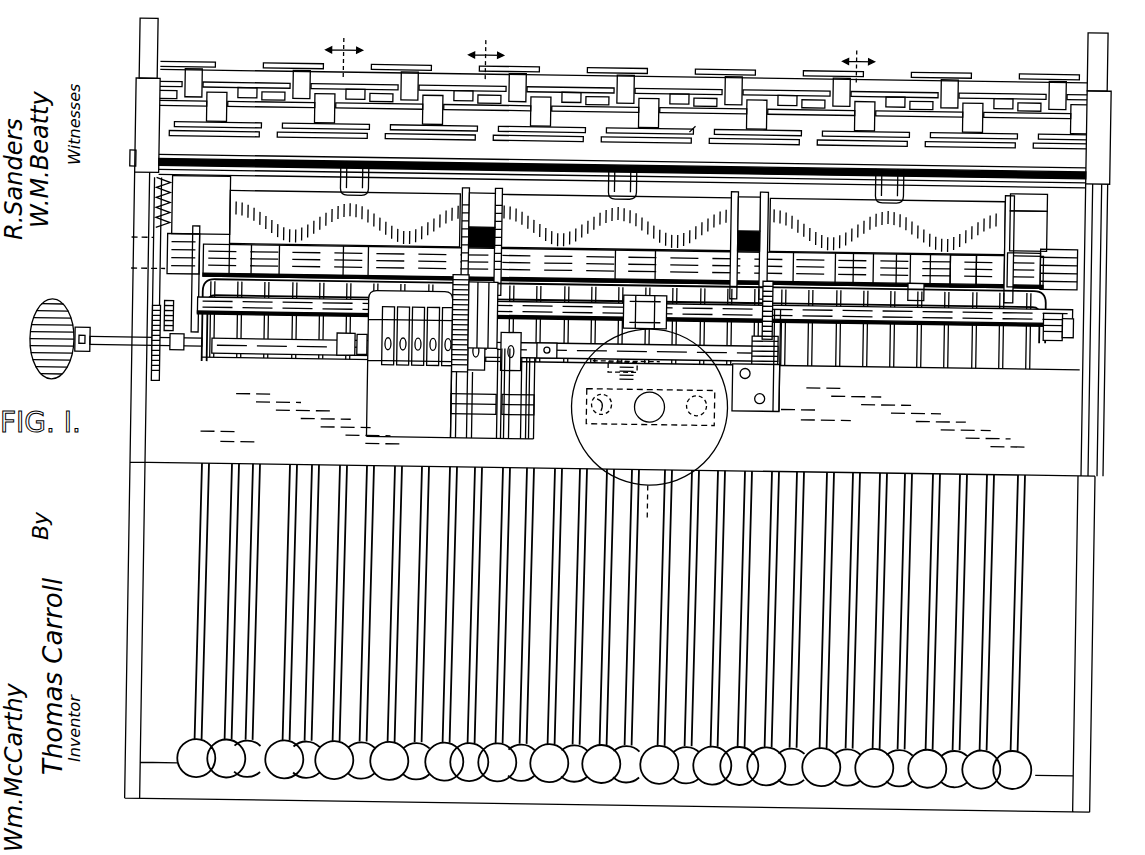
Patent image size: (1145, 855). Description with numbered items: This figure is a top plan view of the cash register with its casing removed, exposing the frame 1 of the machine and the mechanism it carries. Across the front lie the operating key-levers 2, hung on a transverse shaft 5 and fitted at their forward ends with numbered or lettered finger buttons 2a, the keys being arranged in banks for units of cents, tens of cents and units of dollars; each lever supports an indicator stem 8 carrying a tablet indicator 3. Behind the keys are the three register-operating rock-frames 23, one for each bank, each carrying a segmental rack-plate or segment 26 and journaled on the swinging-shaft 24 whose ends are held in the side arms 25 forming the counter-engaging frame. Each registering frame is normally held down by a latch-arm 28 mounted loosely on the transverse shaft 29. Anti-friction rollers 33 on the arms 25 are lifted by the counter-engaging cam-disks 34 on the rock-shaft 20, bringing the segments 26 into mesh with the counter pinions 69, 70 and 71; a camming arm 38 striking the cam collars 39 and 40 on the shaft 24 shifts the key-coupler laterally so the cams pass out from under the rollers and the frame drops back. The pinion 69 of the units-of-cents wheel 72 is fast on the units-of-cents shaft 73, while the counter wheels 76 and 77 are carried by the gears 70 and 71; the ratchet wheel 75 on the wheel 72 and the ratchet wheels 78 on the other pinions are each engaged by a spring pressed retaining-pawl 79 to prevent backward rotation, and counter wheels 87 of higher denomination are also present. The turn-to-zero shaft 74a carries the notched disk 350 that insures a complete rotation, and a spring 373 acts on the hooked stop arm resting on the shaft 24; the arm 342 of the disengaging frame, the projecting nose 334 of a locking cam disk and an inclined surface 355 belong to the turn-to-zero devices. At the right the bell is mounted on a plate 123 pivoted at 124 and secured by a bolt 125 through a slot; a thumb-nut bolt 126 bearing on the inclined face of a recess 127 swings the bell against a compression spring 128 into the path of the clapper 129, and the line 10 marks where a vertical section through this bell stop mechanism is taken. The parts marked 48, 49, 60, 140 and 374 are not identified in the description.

The frame 1 is at (1082, 545).
The operating key-levers 2 is at (1030, 567).
The finger buttons 2a is at (906, 780).
The indicators 3 is at (831, 795).
The transverse shaft 5 is at (344, 54).
The indicator stem 8 is at (395, 110).
The section line 10 is at (668, 285).
The rock-shaft 20 is at (930, 312).
The register-operating rock-frame 23 is at (617, 226).
The swinging-shaft 24 is at (203, 247).
The side arms 25 is at (192, 350).
The segmental rack-plate 26 is at (782, 233).
The latch-arms 28 is at (897, 189).
The transverse shaft 29 is at (815, 167).
The anti-friction roller 33 is at (1072, 318).
The counter-engaging cam-disks 34 is at (180, 297).
The second camming arm 38 is at (911, 283).
The cam collar 39 is at (944, 235).
The second cam collar 40 is at (912, 272).
The bracket 48 is at (1030, 200).
The bracket block 49 is at (1031, 231).
The lever block 60 is at (512, 392).
The counter pinion 69 is at (770, 360).
The counter pinion 70 is at (470, 366).
The counter pinion 71 is at (420, 366).
The units-of-cents wheel 72 is at (512, 368).
The units-of-cents shaft 73 is at (716, 353).
The turn-to-zero shaft 74a is at (251, 345).
The ratchet wheel 75 is at (546, 354).
The counter wheel 76 is at (455, 366).
The counter wheel 77 is at (412, 366).
The ratchet wheel 78 is at (480, 340).
The retaining-pawl 79 is at (526, 435).
The counter wheels 87 is at (396, 366).
The plate 123 is at (664, 420).
The pivot 124 is at (697, 408).
The bolt 125 is at (602, 408).
The screw or bolt 126 is at (648, 414).
The recess 127 is at (718, 437).
The compression spring 128 is at (630, 377).
The bell clapper 129 is at (641, 295).
The handwheel 140 is at (28, 338).
The projecting nose 334 is at (358, 375).
The arm 342 is at (435, 280).
The disk 350 is at (162, 378).
The inclined surface 355 is at (350, 355).
The spring 373 is at (150, 205).
The rod 374 is at (158, 280).